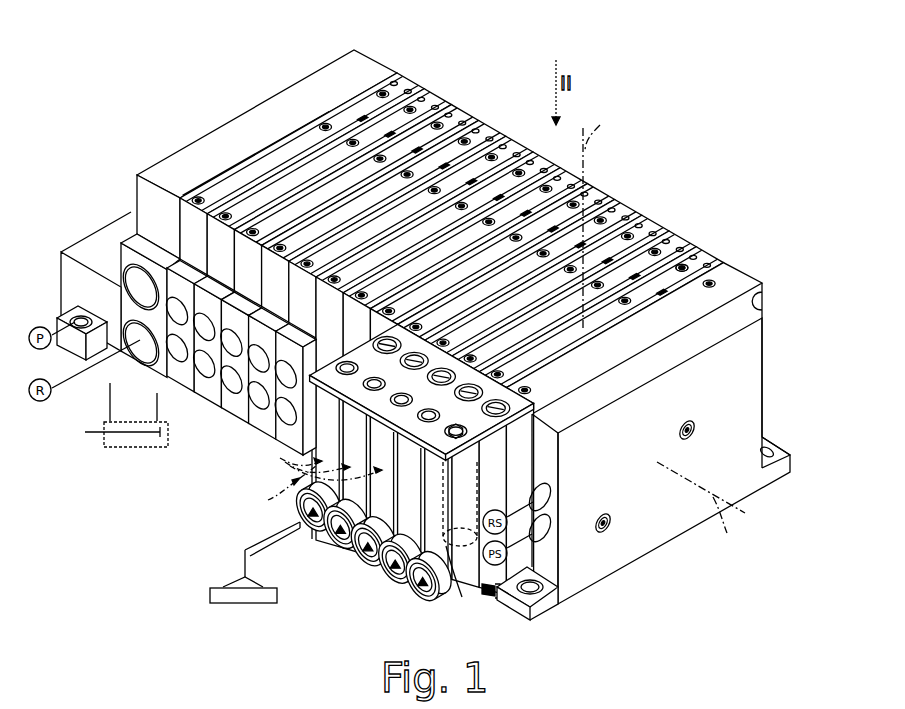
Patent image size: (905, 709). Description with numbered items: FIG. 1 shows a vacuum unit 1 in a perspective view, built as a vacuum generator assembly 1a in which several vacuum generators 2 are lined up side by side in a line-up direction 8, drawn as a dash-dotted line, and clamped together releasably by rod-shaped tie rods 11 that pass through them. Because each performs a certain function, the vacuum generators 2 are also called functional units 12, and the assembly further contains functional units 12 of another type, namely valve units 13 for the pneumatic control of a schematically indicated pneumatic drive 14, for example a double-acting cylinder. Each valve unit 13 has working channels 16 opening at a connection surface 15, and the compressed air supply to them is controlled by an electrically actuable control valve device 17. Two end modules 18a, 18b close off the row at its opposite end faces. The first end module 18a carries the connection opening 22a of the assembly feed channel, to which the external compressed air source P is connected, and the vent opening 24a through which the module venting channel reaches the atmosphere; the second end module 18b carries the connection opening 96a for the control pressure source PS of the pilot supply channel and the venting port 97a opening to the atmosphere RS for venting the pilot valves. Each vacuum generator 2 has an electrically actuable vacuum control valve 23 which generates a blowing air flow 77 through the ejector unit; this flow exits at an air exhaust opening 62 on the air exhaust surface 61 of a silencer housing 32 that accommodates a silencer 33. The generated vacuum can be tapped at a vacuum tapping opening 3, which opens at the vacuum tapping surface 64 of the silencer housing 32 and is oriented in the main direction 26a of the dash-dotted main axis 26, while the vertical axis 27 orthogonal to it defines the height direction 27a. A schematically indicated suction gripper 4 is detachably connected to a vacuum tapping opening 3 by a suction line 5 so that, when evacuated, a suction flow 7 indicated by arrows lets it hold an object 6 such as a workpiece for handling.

The vacuum unit 1 is at (106, 203).
The vacuum generator assembly 1a is at (82, 333).
The vacuum generator 2 is at (684, 222).
The functional unit 12 is at (451, 321).
The valve unit 13 is at (370, 298).
The control valve device 17 is at (305, 172).
The vacuum control valve 23 is at (668, 278).
The vertical axis 27 is at (609, 214).
The height direction 27a is at (592, 137).
The first end module 18a is at (112, 228).
The second end module 18b is at (660, 527).
The connection opening 22a is at (137, 268).
The vent opening 24a is at (138, 340).
The pneumatic drive 14 is at (113, 444).
The connection surface 15 is at (205, 383).
The working channel 16 is at (263, 392).
The vacuum tapping surface 64 is at (319, 462).
The main axis 26 is at (248, 493).
The main direction 26a is at (308, 472).
The air exhaust surface 61 is at (457, 412).
The air exhaust opening 62 is at (349, 365).
The blowing air flow 77 is at (458, 434).
The tie rod 11 is at (700, 432).
The line-up direction 8 is at (701, 509).
The venting port 97a is at (548, 502).
The connection opening 96a is at (550, 540).
The suction line 5 is at (248, 542).
The suction gripper 4 is at (242, 577).
The object 6 is at (222, 603).
The suction flow 7 is at (362, 546).
The vacuum tapping opening 3 is at (420, 580).
The silencer 33 is at (472, 575).
The silencer housing 32 is at (486, 600).